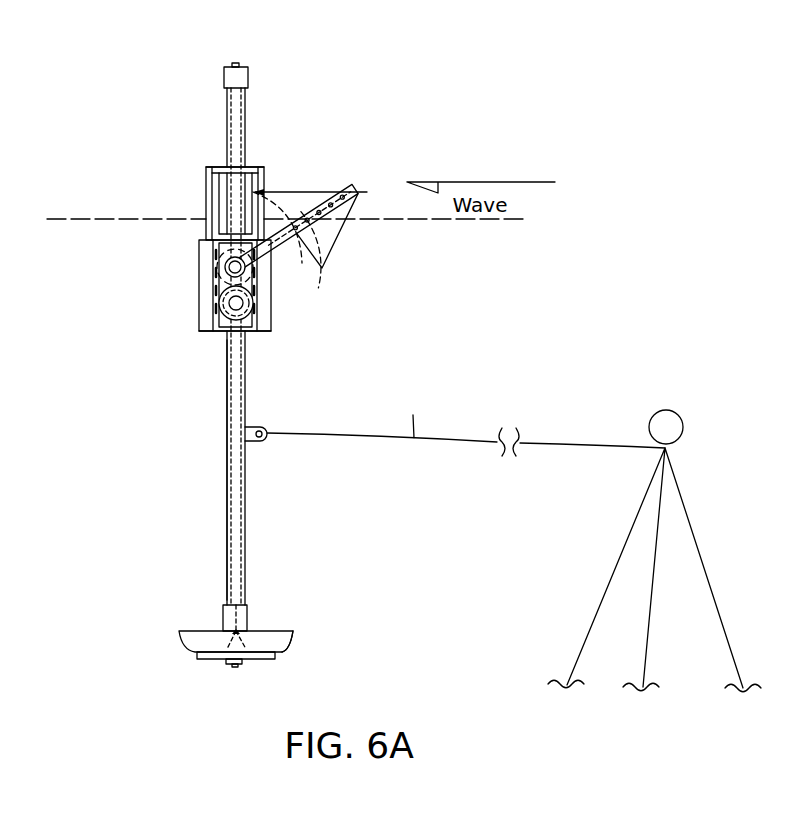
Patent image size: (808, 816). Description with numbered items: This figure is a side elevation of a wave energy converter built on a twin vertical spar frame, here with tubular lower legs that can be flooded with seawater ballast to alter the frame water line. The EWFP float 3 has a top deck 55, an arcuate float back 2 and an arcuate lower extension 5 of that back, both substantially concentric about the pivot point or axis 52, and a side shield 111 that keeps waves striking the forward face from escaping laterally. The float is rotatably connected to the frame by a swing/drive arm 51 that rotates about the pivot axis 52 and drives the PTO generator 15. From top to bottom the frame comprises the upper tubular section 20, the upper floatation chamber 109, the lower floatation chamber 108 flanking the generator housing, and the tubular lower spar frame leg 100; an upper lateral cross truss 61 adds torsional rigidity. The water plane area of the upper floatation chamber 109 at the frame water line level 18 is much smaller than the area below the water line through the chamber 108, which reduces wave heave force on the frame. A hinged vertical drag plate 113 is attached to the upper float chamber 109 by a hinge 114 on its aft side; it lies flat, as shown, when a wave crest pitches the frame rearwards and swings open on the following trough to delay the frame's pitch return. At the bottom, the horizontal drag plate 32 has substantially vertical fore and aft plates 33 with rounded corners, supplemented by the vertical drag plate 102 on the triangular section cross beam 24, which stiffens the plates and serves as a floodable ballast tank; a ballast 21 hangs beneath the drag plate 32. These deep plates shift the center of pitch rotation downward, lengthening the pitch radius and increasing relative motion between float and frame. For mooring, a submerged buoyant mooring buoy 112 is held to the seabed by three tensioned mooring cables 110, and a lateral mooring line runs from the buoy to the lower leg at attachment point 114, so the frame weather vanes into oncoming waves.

The arcuate float back 2 is at (277, 205).
The EWFP float 3 is at (305, 205).
The arcuate lower extension of float back 5 is at (318, 288).
The PTO generator 15 is at (252, 331).
The frame water line level 18 is at (465, 222).
The upper tubular section 20 is at (227, 118).
The ballast 21 is at (261, 657).
The triangular section cross beam 24 is at (232, 630).
The horizontal drag plate 32 is at (207, 649).
The vertical plates (raised fore and aft edges) 33 is at (294, 637).
The swing/drive arm 51 is at (265, 250).
The pivot point or axis 52 is at (248, 268).
The top deck 55 is at (337, 187).
The upper lateral cross truss 61 is at (225, 83).
The lower spar frame leg 100 is at (227, 458).
The vertical drag plate 102 is at (240, 592).
The lower floatation chamber 108 is at (220, 282).
The upper floatation chamber 109 is at (205, 218).
The tensioned mooring cables 110 is at (697, 542).
The side shield 111 is at (335, 232).
The mooring buoy 112 is at (668, 410).
The hinged vertical drag plate 113 is at (237, 205).
The hinge / mooring attachment point 114 is at (212, 175).